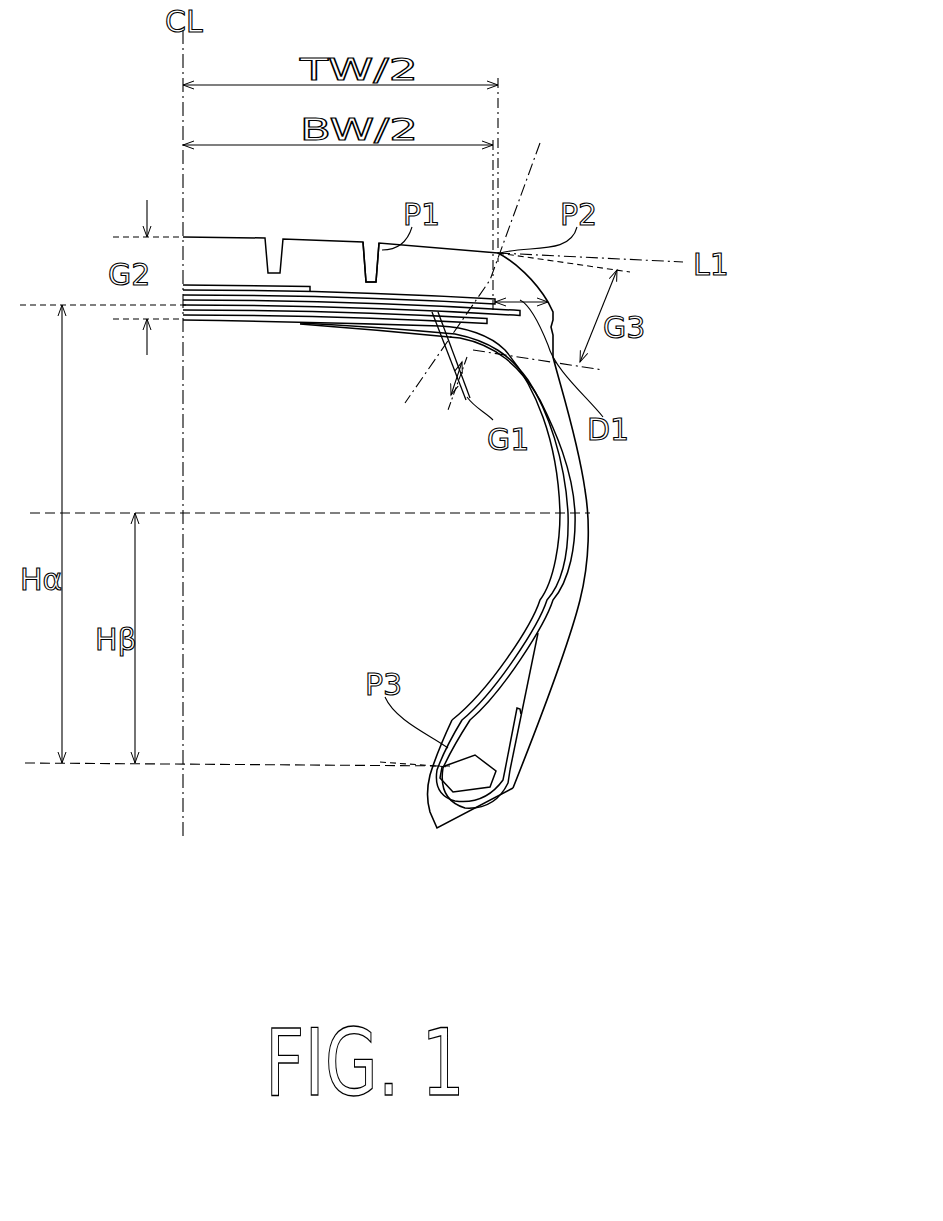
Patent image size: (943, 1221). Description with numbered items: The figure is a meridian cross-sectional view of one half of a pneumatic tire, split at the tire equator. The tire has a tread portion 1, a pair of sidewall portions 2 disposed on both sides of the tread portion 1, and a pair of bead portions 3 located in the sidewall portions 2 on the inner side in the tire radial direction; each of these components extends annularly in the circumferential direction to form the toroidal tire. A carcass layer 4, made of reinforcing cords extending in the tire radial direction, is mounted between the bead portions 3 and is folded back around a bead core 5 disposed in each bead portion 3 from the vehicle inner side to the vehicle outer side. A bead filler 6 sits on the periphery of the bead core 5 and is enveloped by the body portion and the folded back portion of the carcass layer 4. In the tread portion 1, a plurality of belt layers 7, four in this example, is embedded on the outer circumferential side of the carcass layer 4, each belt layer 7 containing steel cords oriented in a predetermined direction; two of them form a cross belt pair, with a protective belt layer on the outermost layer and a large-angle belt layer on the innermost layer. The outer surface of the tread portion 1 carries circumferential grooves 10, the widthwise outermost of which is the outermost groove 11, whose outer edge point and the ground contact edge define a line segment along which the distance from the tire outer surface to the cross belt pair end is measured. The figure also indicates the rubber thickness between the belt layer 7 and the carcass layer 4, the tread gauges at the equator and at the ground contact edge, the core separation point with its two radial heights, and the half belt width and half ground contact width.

The tread portion 1 is at (203, 233).
The sidewall portion 2 is at (600, 553).
The bead portion 3 is at (540, 790).
The carcass layer 4 is at (557, 420).
The bead core 5 is at (465, 775).
The bead filler 6 is at (480, 725).
The belt layer 7 is at (230, 290).
The circumferential groove 10 is at (384, 223).
The outermost groove 11 is at (374, 265).